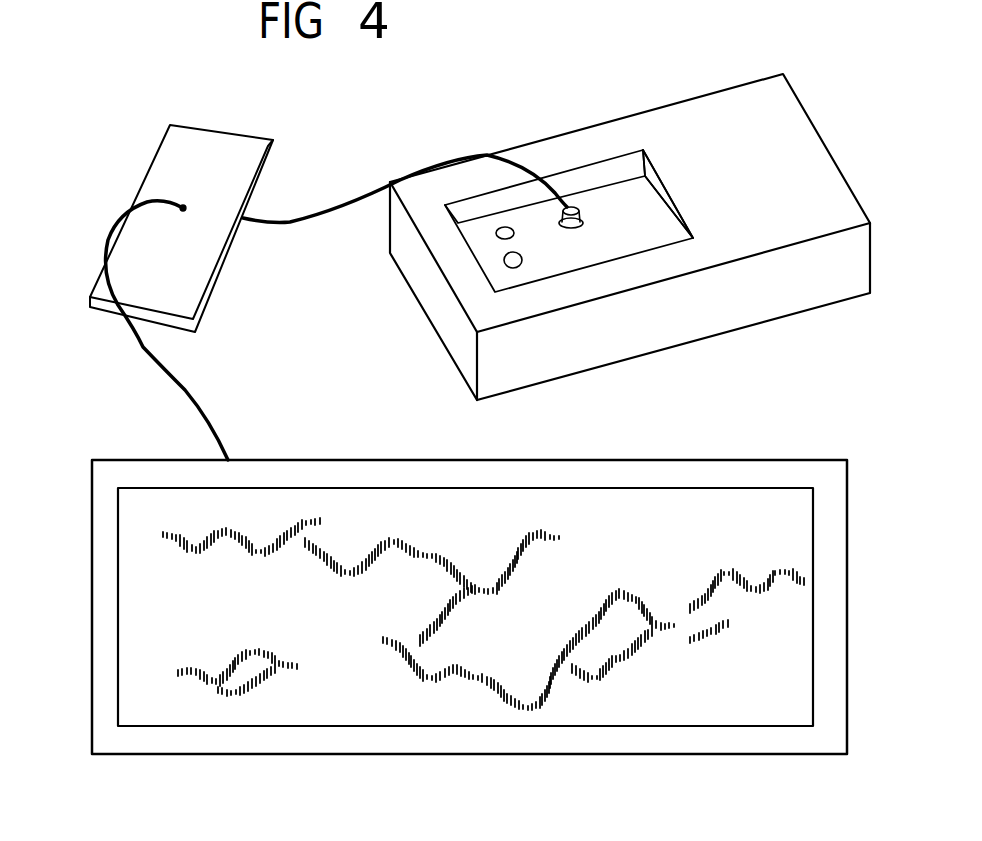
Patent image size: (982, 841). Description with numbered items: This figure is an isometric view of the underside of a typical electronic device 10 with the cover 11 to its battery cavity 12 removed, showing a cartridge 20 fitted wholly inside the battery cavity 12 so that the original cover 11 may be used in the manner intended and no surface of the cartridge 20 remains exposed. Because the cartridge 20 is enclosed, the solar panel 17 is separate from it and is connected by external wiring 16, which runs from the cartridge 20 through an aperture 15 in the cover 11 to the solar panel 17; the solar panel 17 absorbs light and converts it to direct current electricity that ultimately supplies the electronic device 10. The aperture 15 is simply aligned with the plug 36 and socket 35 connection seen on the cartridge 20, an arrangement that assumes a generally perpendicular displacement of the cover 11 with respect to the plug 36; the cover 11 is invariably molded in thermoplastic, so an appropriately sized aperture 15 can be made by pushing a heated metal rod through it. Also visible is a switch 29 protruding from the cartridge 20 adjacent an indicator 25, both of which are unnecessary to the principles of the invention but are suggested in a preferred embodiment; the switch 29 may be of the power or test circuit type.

The electronic device 10 is at (780, 307).
The cover 11 is at (163, 162).
The battery cavity 12 is at (655, 185).
The aperture 15 is at (185, 211).
The external wiring 16 is at (300, 223).
The solar panel 17 is at (347, 498).
The cartridge 20 is at (655, 232).
The indicator 25 is at (495, 233).
The switch 29 is at (522, 267).
The socket 35 is at (583, 227).
The plug 36 is at (580, 210).